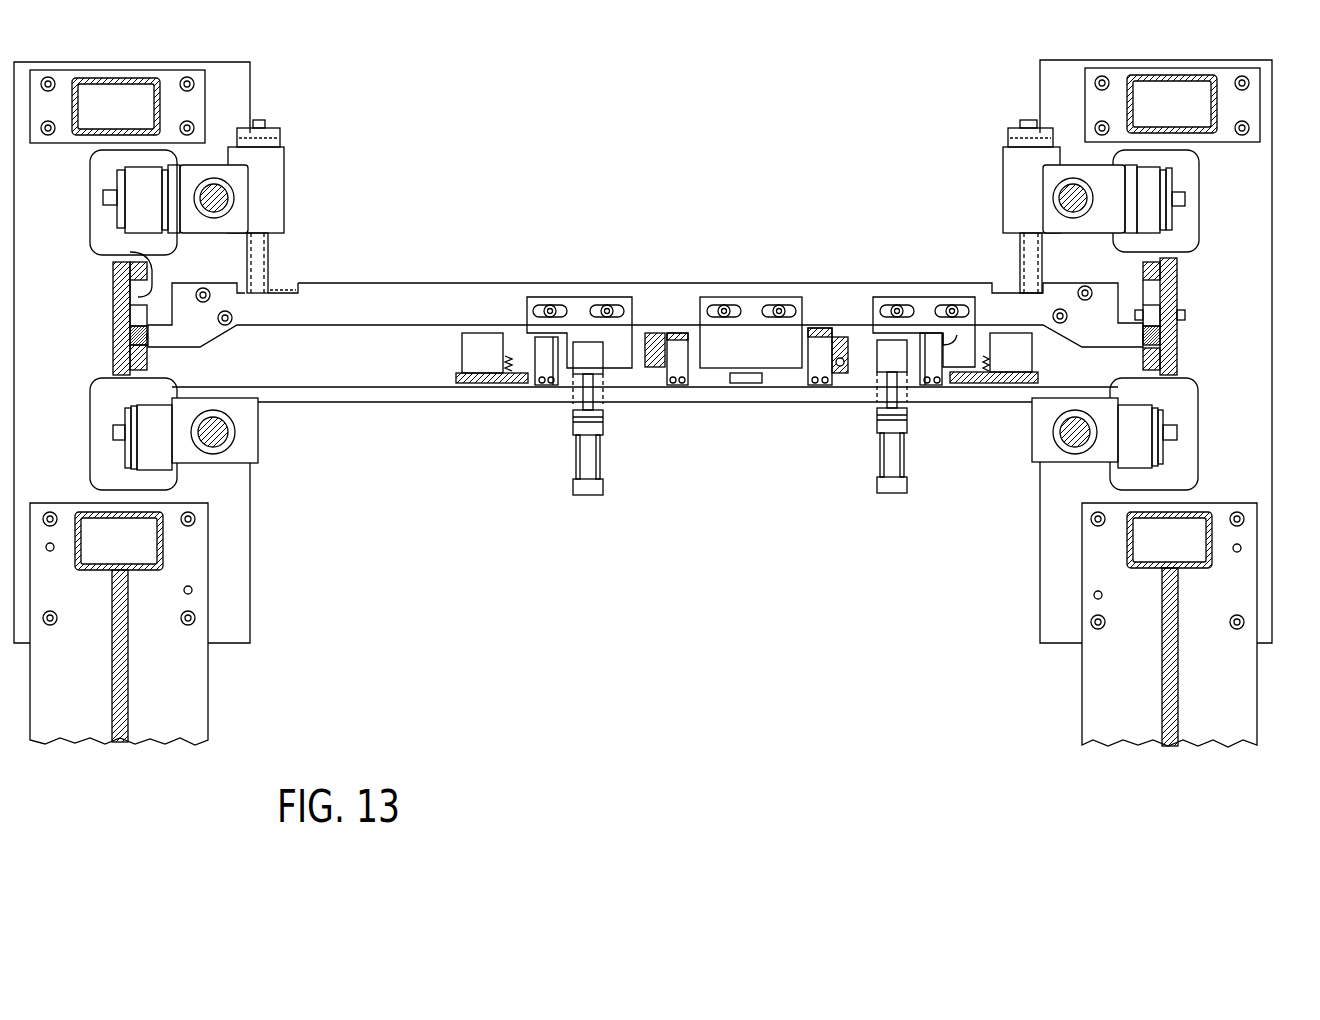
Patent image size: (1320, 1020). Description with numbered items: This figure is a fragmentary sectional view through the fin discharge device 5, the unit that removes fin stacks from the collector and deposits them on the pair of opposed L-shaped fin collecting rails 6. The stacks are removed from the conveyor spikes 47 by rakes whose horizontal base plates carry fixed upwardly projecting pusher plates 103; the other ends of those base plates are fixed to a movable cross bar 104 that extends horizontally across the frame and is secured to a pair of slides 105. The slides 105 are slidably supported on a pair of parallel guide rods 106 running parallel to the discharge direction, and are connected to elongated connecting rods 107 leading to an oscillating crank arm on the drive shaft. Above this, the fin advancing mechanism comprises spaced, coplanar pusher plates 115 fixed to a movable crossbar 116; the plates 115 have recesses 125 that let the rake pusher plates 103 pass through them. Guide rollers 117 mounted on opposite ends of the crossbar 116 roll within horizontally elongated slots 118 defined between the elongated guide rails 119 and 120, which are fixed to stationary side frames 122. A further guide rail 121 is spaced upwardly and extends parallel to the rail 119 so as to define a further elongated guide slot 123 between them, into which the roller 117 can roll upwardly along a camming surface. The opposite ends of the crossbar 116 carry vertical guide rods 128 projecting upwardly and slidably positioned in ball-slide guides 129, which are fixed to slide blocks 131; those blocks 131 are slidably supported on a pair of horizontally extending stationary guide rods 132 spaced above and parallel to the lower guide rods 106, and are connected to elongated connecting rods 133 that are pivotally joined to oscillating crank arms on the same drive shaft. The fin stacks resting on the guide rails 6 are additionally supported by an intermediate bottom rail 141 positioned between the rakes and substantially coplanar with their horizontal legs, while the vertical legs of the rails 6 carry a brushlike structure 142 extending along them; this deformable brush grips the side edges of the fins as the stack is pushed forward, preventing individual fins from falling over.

The fin discharge device 5 is at (644, 140).
The fin collecting rails 6 is at (475, 348).
The spikes 47 is at (657, 365).
The pusher plate 103 is at (676, 345).
The cross bar 104 is at (327, 392).
The slides 105 is at (256, 432).
The guide rods 106 is at (228, 442).
The connecting rods 107 is at (155, 438).
The pusher plates 115 is at (577, 307).
The crossbar 116 is at (410, 292).
The guide rollers 117 is at (138, 329).
The guide slots 118 is at (148, 334).
The guide rail 119 is at (138, 313).
The lower guide rail 120 is at (130, 356).
The further guide rail 121 is at (1172, 265).
The side frames 122 is at (1145, 295).
The upper guide slot 123 is at (97, 251).
The recesses 125 is at (943, 335).
The vertical guide rods 128 is at (262, 258).
The ball-slide guides 129 is at (275, 153).
The slide blocks 131 is at (236, 177).
The stationary guide rods 132 is at (228, 200).
The connecting rods 133 is at (142, 182).
The intermediate bottom rail 141 is at (745, 385).
The brushlike structure 142 is at (511, 378).